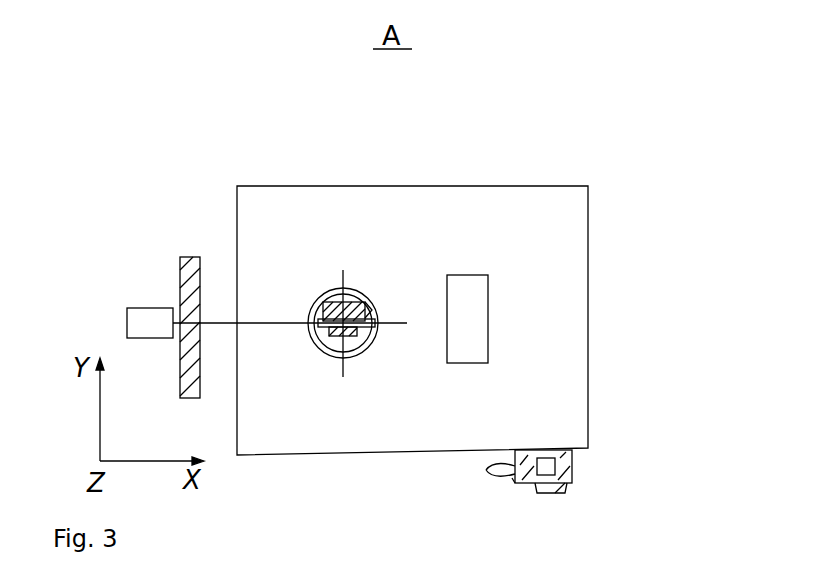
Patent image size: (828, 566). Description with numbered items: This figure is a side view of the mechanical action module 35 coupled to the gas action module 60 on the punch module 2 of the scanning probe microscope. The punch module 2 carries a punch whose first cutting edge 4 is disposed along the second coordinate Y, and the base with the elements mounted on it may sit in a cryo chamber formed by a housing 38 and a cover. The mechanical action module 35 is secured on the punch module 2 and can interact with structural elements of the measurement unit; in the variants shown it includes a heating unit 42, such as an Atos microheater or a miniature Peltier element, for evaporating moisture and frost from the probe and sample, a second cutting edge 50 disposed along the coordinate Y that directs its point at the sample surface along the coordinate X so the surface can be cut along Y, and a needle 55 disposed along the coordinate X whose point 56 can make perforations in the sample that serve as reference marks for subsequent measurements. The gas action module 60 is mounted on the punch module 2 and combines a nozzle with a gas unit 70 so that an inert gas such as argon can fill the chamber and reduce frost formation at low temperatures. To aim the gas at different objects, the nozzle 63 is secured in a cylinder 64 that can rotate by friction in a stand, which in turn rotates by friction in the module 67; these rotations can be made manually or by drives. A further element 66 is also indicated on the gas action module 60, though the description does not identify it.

The punch module 2 is at (237, 248).
The first cutting edge 4 is at (450, 318).
The mechanical action module 35 is at (541, 462).
The housing 38 is at (184, 262).
The heating unit 42 is at (568, 483).
The second cutting edge 50 is at (514, 481).
The needle 55 is at (516, 450).
The point 56 is at (486, 470).
The gas action module 60 is at (322, 305).
The nozzle 63 is at (358, 300).
The cylinder 64 is at (346, 300).
The tip 66 is at (366, 306).
The module 67 is at (334, 300).
The gas unit 70 is at (142, 318).